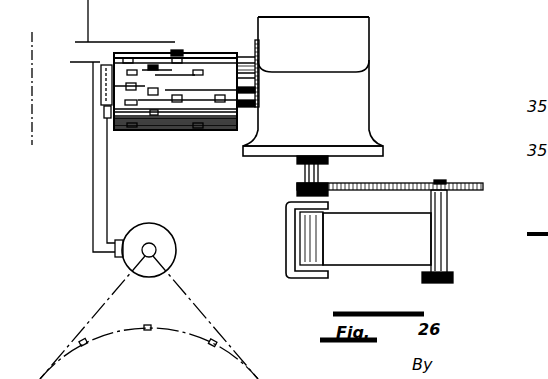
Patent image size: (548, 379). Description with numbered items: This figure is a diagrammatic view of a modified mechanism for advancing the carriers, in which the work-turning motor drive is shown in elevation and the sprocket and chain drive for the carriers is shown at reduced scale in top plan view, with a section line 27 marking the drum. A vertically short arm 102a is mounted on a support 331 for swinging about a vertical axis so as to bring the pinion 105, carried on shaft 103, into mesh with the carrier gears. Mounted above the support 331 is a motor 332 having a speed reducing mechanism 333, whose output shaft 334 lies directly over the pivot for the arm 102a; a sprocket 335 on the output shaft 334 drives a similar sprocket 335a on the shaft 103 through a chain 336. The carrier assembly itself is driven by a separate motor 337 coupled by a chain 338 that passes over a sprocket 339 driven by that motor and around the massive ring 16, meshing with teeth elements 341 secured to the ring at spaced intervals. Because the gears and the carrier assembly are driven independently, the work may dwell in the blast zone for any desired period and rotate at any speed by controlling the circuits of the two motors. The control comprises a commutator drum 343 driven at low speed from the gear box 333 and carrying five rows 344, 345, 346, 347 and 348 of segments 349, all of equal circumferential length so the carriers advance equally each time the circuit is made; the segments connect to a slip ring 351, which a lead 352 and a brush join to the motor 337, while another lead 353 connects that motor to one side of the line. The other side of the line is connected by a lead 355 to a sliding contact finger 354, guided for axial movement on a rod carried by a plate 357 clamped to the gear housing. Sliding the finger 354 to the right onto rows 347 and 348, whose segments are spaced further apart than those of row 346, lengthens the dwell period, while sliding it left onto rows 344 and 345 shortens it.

The ring 16 is at (170, 330).
The section line 27 is at (18, 31).
The shaft 103 is at (440, 181).
The pinion 105 is at (490, 279).
The arm 102a is at (367, 255).
The support 331 is at (288, 246).
The motor 332 is at (362, 30).
The speed reducing mechanism 333 is at (362, 100).
The output shaft 334 is at (308, 170).
The sprocket 335 is at (298, 185).
The sprocket 335a is at (482, 192).
The chain 336 is at (404, 181).
The motor 337 is at (160, 237).
The chain 338 is at (222, 330).
The sprocket 339 is at (149, 258).
The teeth elements 341 is at (83, 346).
The commutator drum 343 is at (223, 50).
The row of segments 344 is at (133, 130).
The row of segments 345 is at (153, 130).
The row of segments 346 is at (178, 131).
The row of segments 347 is at (200, 130).
The row of segments 348 is at (222, 105).
The segments 349 is at (131, 57).
The slip ring 351 is at (100, 85).
The lead 352 is at (108, 182).
The lead 353 is at (93, 205).
The sliding contact finger 354 is at (177, 50).
The lead 355 is at (125, 21).
The plate 357 is at (256, 50).